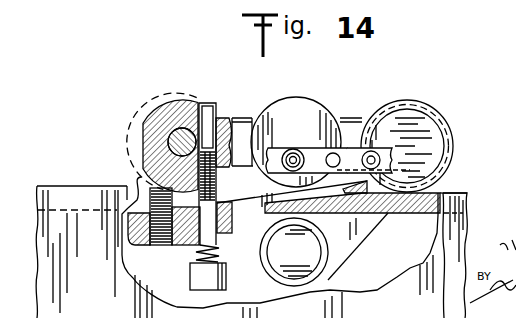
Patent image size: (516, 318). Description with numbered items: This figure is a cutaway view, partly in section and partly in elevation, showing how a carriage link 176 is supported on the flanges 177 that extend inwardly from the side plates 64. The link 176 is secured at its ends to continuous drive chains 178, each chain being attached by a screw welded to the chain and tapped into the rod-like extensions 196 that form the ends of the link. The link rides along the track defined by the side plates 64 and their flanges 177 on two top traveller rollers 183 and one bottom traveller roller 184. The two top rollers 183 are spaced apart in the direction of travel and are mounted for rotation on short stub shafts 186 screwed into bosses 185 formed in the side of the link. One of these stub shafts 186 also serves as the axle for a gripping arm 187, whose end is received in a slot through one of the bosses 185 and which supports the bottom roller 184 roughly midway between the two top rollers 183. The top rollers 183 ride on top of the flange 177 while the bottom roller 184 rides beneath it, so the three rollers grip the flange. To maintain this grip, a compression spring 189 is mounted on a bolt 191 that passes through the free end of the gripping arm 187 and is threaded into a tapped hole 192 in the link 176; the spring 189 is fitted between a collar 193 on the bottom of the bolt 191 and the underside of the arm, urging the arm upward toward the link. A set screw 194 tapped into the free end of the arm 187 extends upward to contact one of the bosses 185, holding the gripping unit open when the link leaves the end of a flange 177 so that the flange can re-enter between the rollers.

The side plates 64 is at (95, 289).
The carriage link 176 is at (350, 120).
The flanges 177 is at (402, 214).
The drive chains 178 is at (316, 147).
The top traveller rollers 183 is at (168, 97).
The bottom traveller roller 184 is at (325, 284).
The bosses 185 is at (194, 108).
The stub shafts 186 is at (170, 139).
The gripping arm 187 is at (333, 235).
The compression spring 189 is at (187, 278).
The bolt 191 is at (189, 253).
The tapped hole 192 is at (215, 122).
The collar 193 is at (226, 277).
The set screw 194 is at (131, 176).
The rod-like extensions 196 is at (301, 99).